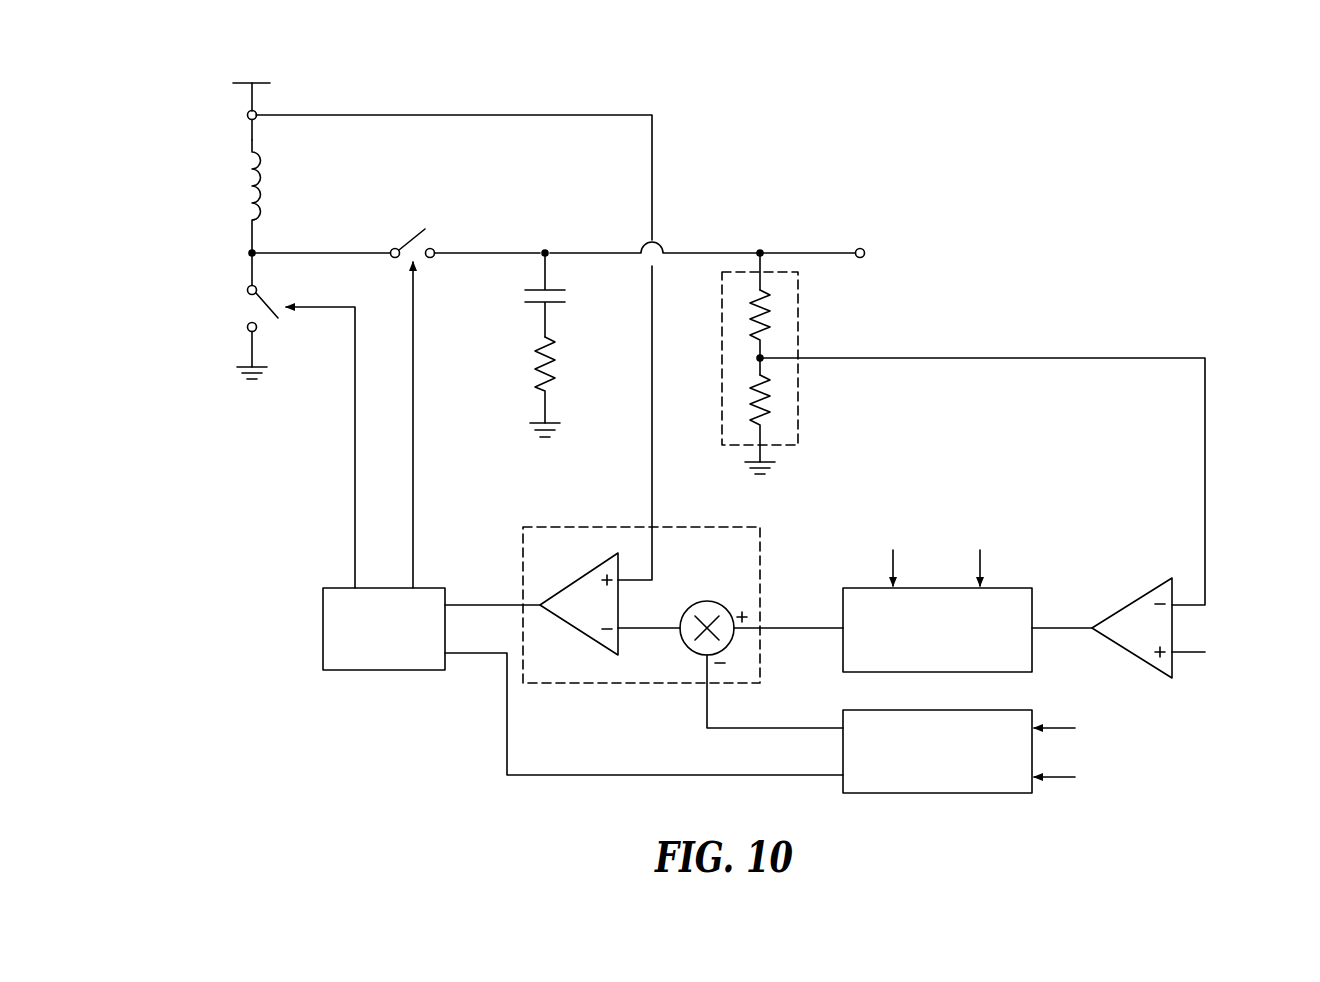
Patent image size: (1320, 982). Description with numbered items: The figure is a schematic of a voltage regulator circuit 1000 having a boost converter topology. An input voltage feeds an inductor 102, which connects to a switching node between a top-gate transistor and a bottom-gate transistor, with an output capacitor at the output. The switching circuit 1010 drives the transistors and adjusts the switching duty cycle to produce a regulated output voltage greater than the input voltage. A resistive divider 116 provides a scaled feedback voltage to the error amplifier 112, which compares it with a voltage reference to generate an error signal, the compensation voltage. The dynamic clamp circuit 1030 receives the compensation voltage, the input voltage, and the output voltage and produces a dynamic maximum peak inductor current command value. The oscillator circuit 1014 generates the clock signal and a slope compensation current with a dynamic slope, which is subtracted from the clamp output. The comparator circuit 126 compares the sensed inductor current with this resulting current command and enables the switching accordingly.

The voltage regulator circuit 1000 is at (1128, 124).
The inductor 102 is at (263, 165).
The resistive divider 116 is at (798, 315).
The comparator circuit 126 is at (586, 527).
The switching circuit 1010 is at (382, 670).
The dynamic clamp circuit 1030 is at (1005, 588).
The error amplifier circuit 112 is at (1132, 601).
The oscillator circuit 1014 is at (940, 710).